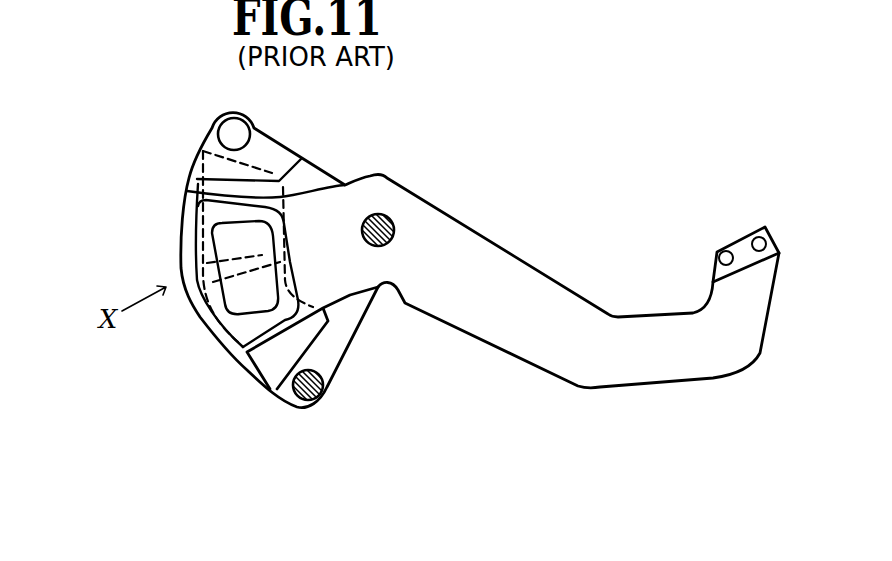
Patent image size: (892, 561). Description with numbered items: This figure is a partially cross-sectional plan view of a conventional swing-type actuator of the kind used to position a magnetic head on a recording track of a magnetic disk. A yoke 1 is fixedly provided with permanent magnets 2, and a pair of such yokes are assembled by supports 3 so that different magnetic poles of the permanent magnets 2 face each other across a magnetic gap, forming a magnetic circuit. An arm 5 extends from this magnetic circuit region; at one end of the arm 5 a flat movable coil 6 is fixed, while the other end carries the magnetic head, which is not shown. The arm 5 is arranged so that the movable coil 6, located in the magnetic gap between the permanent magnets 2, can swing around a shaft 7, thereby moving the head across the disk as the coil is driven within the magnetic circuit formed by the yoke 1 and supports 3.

The yoke 1 is at (345, 338).
The permanent magnets 2 is at (286, 188).
The supports 3 is at (327, 397).
The arm 5 is at (497, 258).
The flat movable coil 6 is at (223, 328).
The shaft 7 is at (385, 213).